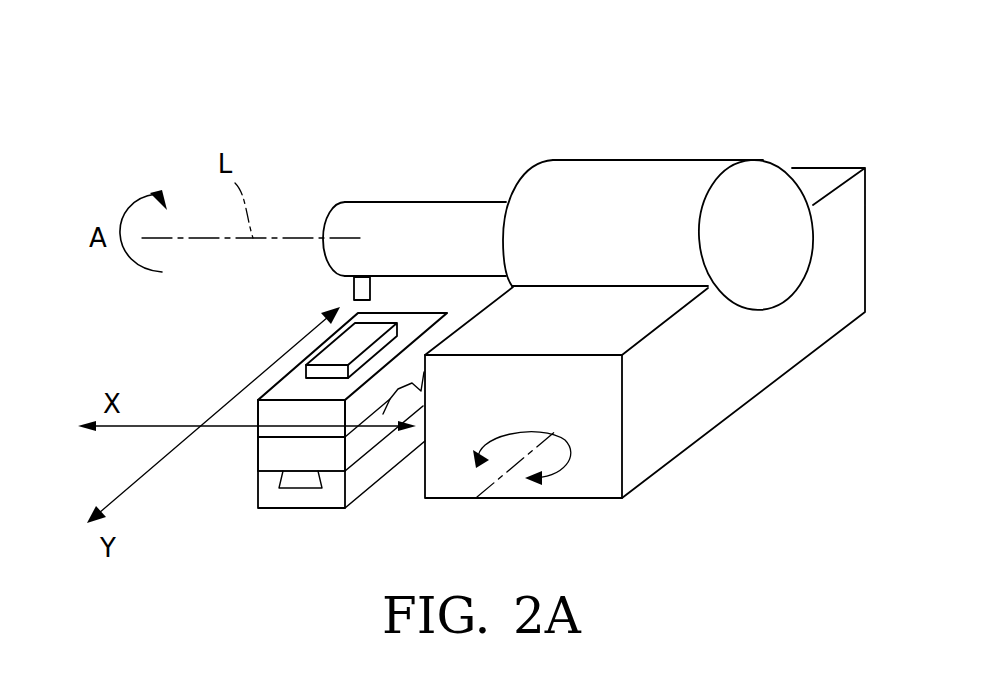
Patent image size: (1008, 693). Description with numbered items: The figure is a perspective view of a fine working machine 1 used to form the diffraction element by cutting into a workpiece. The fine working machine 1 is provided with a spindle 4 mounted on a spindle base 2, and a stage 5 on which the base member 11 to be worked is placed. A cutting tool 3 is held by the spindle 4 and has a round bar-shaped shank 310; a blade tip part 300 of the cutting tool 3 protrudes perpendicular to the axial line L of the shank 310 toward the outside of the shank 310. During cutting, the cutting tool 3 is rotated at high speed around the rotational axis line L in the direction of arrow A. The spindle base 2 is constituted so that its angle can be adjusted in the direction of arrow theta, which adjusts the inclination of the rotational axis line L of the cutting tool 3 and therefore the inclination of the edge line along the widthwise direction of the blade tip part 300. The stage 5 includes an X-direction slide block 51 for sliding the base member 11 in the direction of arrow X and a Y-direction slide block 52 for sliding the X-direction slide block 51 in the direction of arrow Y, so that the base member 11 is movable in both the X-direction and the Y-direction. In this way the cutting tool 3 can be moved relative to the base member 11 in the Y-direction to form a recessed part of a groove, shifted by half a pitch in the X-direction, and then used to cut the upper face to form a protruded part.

The fine working machine 1 is at (632, 110).
The spindle base 2 is at (688, 422).
The cutting tool 3 is at (431, 246).
The spindle 4 is at (665, 178).
The stage 5 is at (302, 498).
The base member 11 is at (363, 342).
The X-direction slide block 51 is at (288, 433).
The Y-direction slide block 52 is at (362, 448).
The blade tip part 300 is at (354, 290).
The shank 310 is at (353, 202).